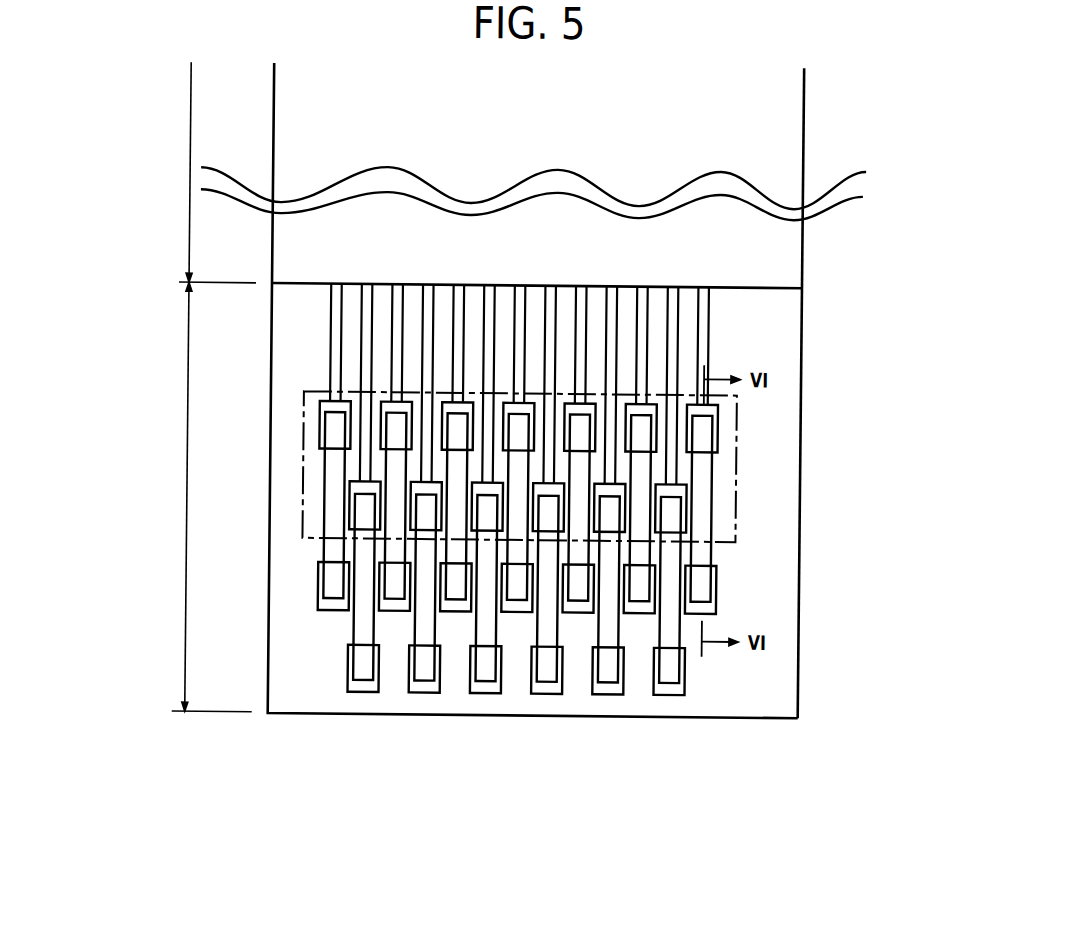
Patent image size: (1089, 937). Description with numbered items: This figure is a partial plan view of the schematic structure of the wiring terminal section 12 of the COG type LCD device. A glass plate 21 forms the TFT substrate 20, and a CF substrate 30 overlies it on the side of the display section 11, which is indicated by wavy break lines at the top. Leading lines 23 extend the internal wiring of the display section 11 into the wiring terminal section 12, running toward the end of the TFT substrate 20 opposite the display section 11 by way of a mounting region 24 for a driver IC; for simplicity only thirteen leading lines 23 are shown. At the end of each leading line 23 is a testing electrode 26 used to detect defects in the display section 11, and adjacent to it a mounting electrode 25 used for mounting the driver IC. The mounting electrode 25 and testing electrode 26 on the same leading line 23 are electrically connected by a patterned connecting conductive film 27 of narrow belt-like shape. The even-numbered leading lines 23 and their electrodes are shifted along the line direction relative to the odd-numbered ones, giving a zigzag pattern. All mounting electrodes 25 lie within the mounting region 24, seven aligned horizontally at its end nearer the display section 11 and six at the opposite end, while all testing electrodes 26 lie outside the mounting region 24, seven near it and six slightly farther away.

The display section 11 is at (152, 172).
The wiring terminal section 12 is at (149, 496).
The TFT substrate 20 is at (483, 732).
The glass plate 21 is at (780, 308).
The leading lines 23 is at (705, 314).
The mounting region 24 is at (304, 548).
The mounting electrodes 25 is at (719, 408).
The testing electrodes 26 is at (719, 600).
The connecting conductive film 27 is at (712, 520).
The CF substrate 30 is at (547, 138).